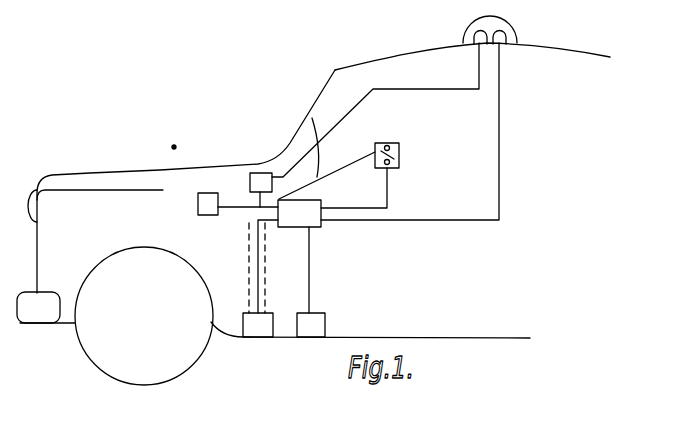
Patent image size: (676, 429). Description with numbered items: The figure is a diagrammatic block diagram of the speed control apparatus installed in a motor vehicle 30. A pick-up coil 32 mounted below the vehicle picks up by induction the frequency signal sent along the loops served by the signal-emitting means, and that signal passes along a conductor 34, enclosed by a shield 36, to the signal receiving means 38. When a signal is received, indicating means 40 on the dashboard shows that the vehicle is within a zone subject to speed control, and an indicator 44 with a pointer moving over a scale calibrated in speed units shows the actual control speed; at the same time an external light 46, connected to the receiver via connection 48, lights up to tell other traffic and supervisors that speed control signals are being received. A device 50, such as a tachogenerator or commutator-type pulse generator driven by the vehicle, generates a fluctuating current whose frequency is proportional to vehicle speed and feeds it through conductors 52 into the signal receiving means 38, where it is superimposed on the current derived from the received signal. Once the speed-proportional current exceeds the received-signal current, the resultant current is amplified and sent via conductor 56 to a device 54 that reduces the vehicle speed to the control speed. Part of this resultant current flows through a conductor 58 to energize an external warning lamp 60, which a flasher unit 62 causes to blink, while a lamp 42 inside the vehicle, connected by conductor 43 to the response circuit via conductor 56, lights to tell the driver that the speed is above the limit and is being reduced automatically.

The motor vehicle 30 is at (127, 146).
The pick-up coil 32 is at (250, 337).
The conductor 34 is at (255, 265).
The shield 36 is at (249, 233).
The signal receiving means 38 is at (318, 229).
The indicating means 40 is at (383, 164).
The lamp 42 is at (399, 142).
The conductor 43 is at (312, 118).
The indicator 44 is at (393, 172).
The light 46 is at (483, 32).
The connection 48 is at (498, 167).
The device 50 is at (325, 313).
The conductors 52 is at (309, 278).
The device 54 is at (205, 193).
The conductor 56 is at (222, 206).
The conductor 58 is at (306, 155).
The lamp 60 is at (467, 39).
The flasher unit 62 is at (256, 173).